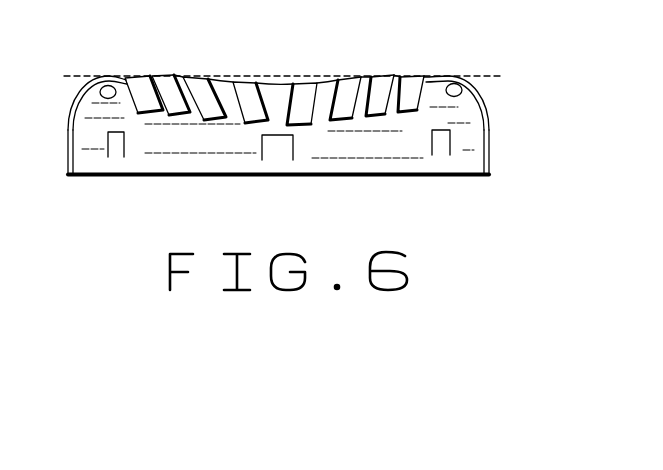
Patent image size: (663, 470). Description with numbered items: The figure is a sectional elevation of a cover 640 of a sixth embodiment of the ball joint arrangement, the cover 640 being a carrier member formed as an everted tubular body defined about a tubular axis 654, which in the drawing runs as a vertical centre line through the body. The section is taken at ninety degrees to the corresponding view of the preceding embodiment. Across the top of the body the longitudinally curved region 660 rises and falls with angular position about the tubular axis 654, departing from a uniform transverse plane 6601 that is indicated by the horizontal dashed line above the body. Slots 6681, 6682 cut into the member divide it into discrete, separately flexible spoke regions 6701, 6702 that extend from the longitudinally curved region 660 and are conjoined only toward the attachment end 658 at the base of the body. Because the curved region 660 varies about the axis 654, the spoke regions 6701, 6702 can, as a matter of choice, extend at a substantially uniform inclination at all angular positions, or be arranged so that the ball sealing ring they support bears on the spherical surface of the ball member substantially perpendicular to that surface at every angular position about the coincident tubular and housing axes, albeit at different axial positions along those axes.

The cover 640 is at (512, 123).
The tubular axis 654 is at (279, 55).
The attachment end 658 is at (483, 175).
The longitudinally curved region 660 is at (478, 104).
The uniform transverse plane 6601 is at (84, 75).
The slot 6681 is at (404, 88).
The slot 6682 is at (373, 87).
The spoke region 6701 is at (388, 88).
The spoke region 6702 is at (339, 86).